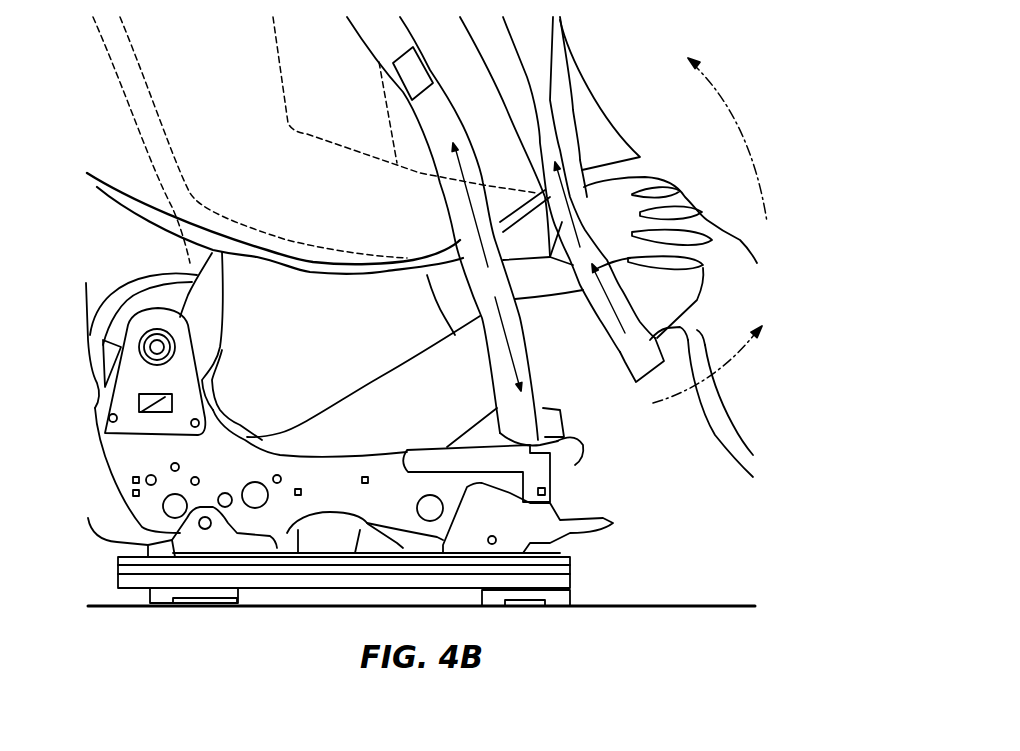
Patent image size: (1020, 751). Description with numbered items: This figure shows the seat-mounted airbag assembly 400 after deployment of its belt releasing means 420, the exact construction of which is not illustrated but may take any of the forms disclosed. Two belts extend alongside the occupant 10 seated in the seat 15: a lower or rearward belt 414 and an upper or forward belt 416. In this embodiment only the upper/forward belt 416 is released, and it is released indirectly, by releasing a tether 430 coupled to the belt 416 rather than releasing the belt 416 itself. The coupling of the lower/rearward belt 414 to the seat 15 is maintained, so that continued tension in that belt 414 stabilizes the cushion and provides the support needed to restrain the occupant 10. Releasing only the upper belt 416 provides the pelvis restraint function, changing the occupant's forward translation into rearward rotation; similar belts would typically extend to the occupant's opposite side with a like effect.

The occupant 10 is at (745, 242).
The seat 15 is at (123, 467).
The seat-mounted airbag assembly 400 is at (743, 90).
The lower/rearward belt 414 is at (440, 108).
The upper/forward belt 416 is at (547, 137).
The belt releasing means 420 is at (533, 451).
The tether 430 is at (636, 382).